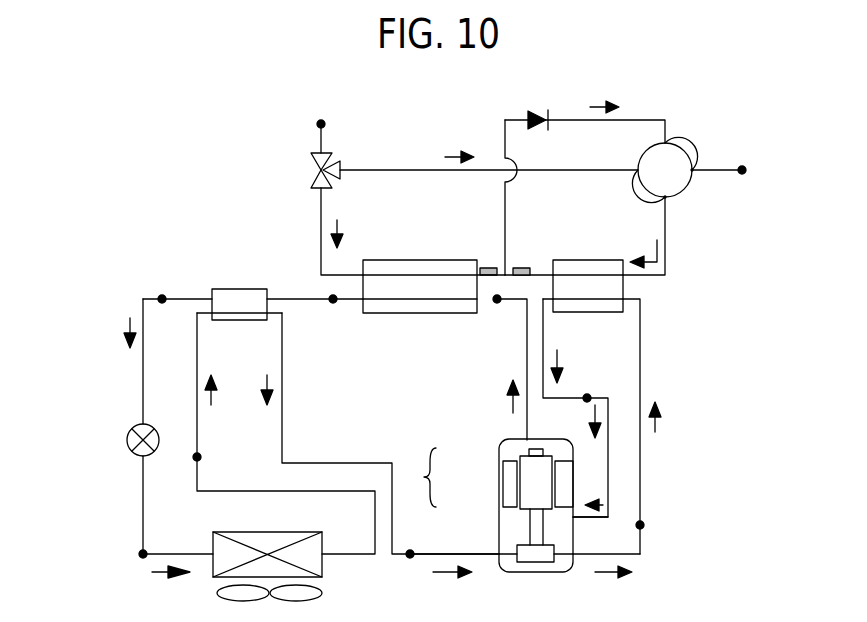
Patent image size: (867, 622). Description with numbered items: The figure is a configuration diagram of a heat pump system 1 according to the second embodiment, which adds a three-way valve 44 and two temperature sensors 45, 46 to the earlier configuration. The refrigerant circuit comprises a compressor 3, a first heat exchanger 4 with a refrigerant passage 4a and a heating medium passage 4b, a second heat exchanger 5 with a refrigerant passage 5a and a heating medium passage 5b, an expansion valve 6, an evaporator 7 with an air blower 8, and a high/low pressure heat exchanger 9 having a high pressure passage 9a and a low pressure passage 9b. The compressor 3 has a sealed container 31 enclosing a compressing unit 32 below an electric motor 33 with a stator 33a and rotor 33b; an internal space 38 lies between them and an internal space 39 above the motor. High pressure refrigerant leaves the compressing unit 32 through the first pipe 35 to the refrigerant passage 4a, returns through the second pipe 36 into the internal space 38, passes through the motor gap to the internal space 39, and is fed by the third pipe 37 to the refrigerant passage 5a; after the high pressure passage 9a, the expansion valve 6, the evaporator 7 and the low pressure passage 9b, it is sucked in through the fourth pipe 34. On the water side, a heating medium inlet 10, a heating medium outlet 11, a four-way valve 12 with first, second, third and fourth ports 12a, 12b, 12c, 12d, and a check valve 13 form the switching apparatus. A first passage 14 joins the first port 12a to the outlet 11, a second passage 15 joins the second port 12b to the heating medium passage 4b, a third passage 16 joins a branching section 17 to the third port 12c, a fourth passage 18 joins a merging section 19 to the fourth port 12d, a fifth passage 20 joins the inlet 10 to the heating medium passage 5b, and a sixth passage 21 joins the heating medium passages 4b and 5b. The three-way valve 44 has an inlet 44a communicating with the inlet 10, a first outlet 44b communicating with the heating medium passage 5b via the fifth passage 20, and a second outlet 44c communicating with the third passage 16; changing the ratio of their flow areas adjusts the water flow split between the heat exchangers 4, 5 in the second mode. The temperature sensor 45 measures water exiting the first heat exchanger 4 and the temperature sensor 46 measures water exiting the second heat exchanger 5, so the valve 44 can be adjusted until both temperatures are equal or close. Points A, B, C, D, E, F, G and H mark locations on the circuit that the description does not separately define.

The heat pump system 1 is at (452, 116).
The compressor 3 is at (482, 487).
The first heat exchanger 4 is at (589, 282).
The refrigerant passage 4a is at (612, 301).
The heating medium passage 4b is at (560, 274).
The second heat exchanger 5 is at (434, 283).
The refrigerant passage 5a is at (400, 301).
The heating medium passage 5b is at (380, 274).
The expansion valve 6 is at (134, 428).
The evaporator 7 is at (310, 532).
The air blower 8 is at (322, 593).
The high/low pressure heat exchanger 9 is at (253, 305).
The high pressure passage 9a is at (222, 295).
The low pressure passage 9b is at (238, 314).
The heating medium inlet 10 is at (317, 124).
The heating medium outlet 11 is at (744, 168).
The four-way valve 12 is at (665, 161).
The first port 12a is at (694, 168).
The second port 12b is at (664, 199).
The third port 12c is at (638, 170).
The fourth port 12d is at (672, 146).
The check valve 13 is at (535, 112).
The first passage 14 is at (718, 172).
The second passage 15 is at (656, 277).
The third passage 16 is at (425, 170).
The branching section 17 is at (318, 170).
The fourth passage 18 is at (628, 120).
The merging section 19 is at (503, 268).
The fifth passage 20 is at (320, 220).
The sixth passage 21 is at (540, 274).
The sealed container 31 is at (508, 447).
The compressing unit 32 is at (520, 548).
The electric motor 33 is at (471, 481).
The stator 33a is at (503, 470).
The rotor 33b is at (527, 497).
The fourth pipe 34 is at (470, 556).
The first pipe 35 is at (585, 556).
The second pipe 36 is at (590, 518).
The third pipe 37 is at (529, 425).
The internal space 38 is at (562, 526).
The internal space 39 is at (512, 440).
The three-way valve 44 is at (326, 161).
The inlet 44a is at (328, 158).
The first outlet 44b is at (316, 180).
The second outlet 44c is at (340, 174).
The temperature sensor 45 is at (522, 267).
The temperature sensor 46 is at (486, 267).
The point A is at (410, 557).
The point B is at (643, 525).
The point C is at (590, 380).
The point D is at (497, 302).
The point E is at (333, 302).
The point F is at (162, 296).
The point G is at (142, 557).
The point H is at (200, 457).